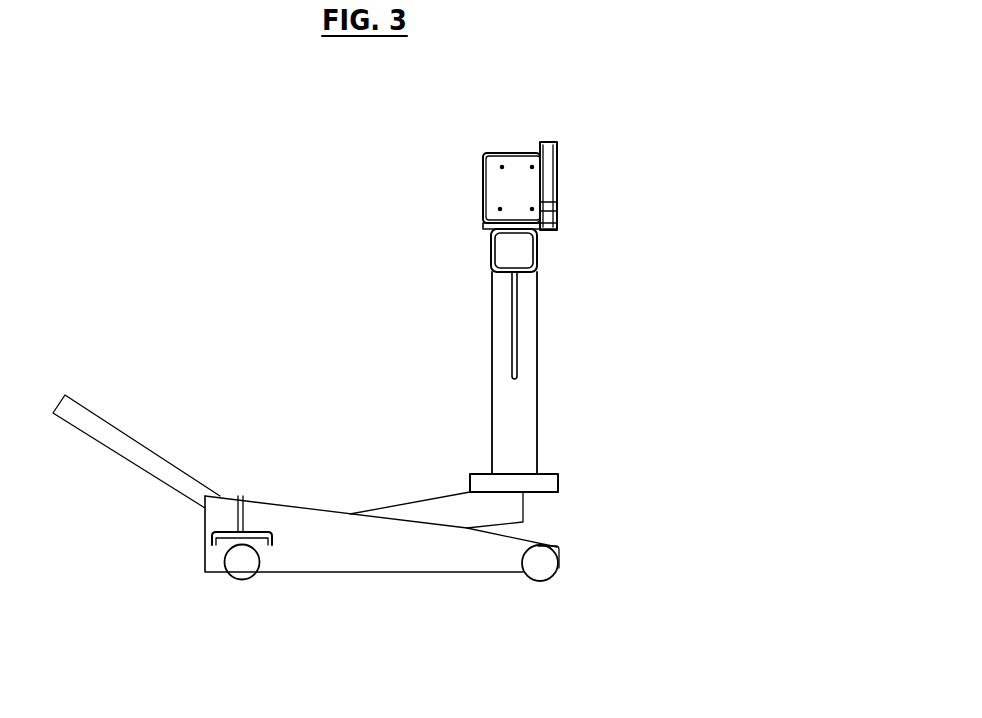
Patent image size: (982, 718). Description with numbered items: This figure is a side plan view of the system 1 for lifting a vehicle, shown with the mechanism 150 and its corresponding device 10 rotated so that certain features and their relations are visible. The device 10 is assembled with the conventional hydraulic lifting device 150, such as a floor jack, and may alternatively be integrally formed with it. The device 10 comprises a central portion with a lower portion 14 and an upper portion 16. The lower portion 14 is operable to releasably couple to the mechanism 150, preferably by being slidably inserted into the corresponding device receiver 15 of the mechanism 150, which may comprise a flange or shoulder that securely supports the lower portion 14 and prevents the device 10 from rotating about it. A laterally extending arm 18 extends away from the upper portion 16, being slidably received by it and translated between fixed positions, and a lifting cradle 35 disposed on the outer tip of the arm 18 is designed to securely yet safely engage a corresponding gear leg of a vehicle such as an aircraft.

The system 1 is at (599, 598).
The lift device 10 is at (548, 119).
The lower portion 14 is at (509, 407).
The device receiver 15 is at (470, 488).
The upper portion 16 is at (485, 238).
The laterally extending arm 18 is at (483, 255).
The lifting cradle 35 is at (497, 178).
The hydraulic lifting device 150 is at (317, 543).